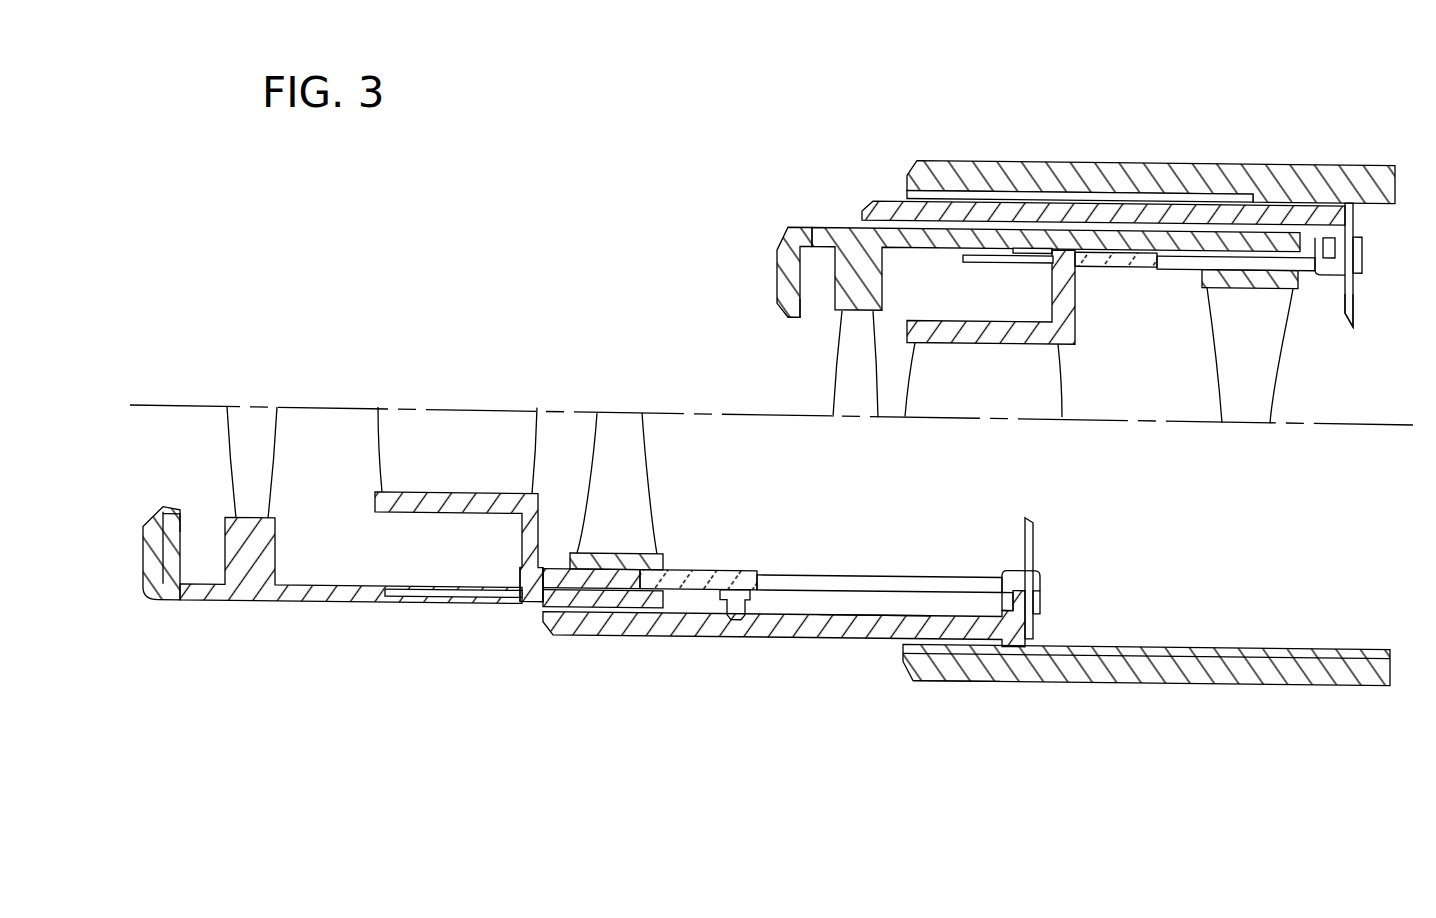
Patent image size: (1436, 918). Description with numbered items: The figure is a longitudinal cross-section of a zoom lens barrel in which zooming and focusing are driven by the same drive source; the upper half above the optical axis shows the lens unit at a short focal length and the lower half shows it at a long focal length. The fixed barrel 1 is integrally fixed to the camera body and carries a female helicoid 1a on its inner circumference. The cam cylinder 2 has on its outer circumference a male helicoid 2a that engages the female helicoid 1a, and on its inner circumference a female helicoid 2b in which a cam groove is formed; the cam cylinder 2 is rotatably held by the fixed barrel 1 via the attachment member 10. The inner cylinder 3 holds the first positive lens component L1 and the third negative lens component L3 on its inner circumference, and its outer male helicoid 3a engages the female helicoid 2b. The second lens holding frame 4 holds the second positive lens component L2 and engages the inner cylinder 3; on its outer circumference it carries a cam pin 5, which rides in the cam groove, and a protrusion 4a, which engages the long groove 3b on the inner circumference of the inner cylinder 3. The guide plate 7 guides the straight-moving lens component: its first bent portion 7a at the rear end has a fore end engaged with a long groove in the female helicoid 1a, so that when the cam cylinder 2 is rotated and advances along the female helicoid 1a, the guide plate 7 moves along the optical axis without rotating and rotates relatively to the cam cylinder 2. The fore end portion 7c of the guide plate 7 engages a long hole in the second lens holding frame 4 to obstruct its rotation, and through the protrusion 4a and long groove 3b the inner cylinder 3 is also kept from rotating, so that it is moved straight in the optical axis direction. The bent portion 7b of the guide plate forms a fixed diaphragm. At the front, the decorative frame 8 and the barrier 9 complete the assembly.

The fixed barrel 1 is at (1170, 151).
The female helicoid 1a is at (1213, 635).
The cam cylinder 2 is at (873, 192).
The male helicoid 2a is at (975, 650).
The female helicoid 2b is at (875, 604).
The inner cylinder 3 is at (830, 219).
The male helicoid 3a is at (620, 602).
The long groove 3b is at (410, 585).
The second lens holding frame 4 is at (962, 311).
The protrusion 4a is at (530, 597).
The cam pin 5 is at (750, 588).
The guide plate 7 is at (1185, 257).
The first bent portion 7a is at (1353, 200).
The first bent portion 7b is at (1353, 290).
The fore end portion 7c is at (1030, 252).
The decorative frame 8 is at (777, 255).
The barrier 9 is at (793, 309).
The attachment member 10 is at (1362, 250).
The first positive lens component L1 is at (836, 345).
The second positive lens component L2 is at (1065, 385).
The third negative lens component L3 is at (1208, 315).